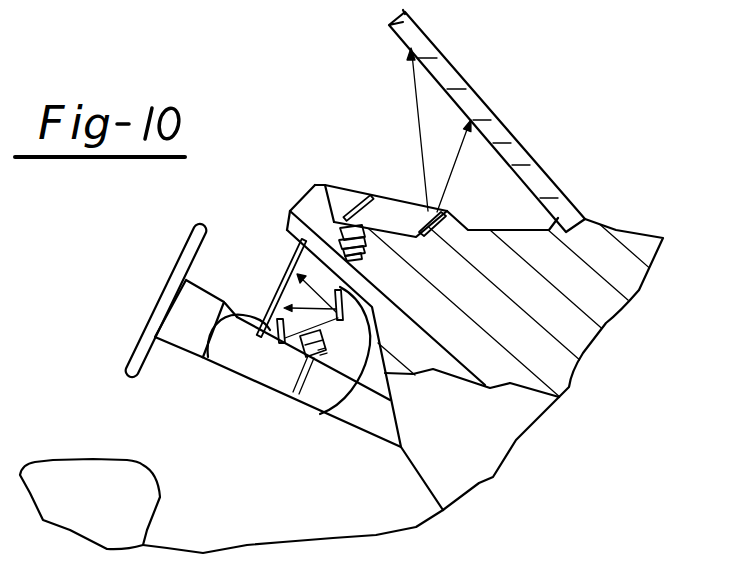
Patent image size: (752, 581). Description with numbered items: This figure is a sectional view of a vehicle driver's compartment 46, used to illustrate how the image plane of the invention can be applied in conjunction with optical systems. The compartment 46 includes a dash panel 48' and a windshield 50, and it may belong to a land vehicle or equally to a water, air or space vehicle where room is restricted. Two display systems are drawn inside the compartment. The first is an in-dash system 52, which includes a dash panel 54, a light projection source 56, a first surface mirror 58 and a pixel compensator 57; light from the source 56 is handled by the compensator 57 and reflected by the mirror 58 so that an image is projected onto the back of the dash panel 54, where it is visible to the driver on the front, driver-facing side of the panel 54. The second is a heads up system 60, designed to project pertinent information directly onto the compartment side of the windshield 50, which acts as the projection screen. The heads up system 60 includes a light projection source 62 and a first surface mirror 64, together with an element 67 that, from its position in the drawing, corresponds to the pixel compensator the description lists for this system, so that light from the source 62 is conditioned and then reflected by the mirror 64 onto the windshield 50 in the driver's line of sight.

The vehicle driver's compartment 46 is at (176, 230).
The dash panel 48' is at (324, 192).
The windshield 50 is at (506, 128).
The in-dash system 52 is at (268, 272).
The dash panel 54 is at (209, 357).
The light projection source 56 is at (312, 383).
The pixel compensator 57 is at (257, 358).
The first surface mirror 58 is at (333, 393).
The heads up system 60 is at (402, 190).
The light projection source 62 is at (289, 243).
The first surface mirror 64 is at (440, 212).
The lever 67 is at (361, 192).